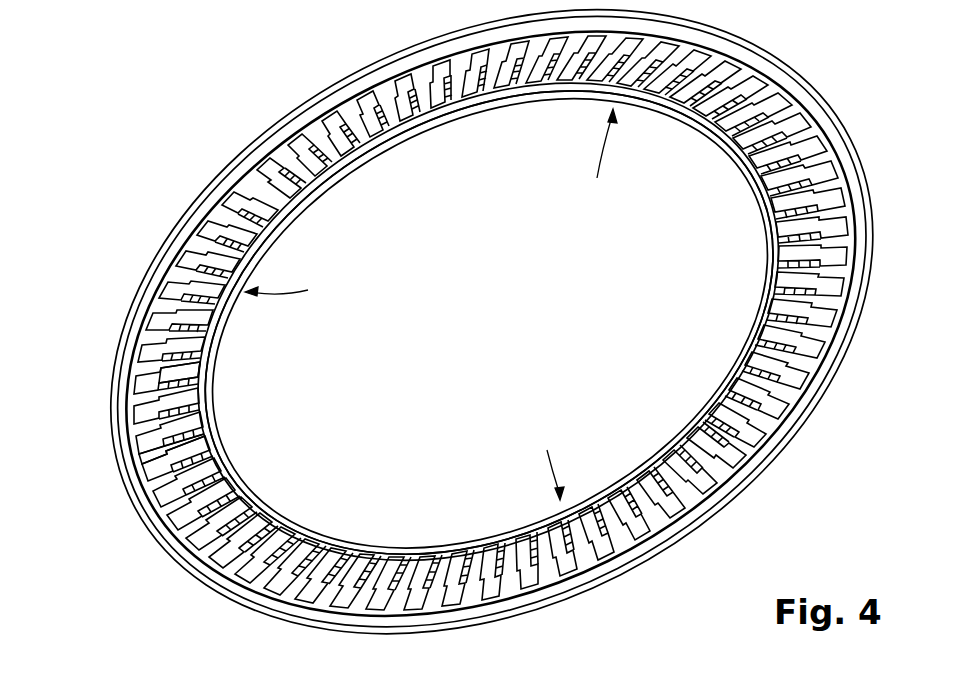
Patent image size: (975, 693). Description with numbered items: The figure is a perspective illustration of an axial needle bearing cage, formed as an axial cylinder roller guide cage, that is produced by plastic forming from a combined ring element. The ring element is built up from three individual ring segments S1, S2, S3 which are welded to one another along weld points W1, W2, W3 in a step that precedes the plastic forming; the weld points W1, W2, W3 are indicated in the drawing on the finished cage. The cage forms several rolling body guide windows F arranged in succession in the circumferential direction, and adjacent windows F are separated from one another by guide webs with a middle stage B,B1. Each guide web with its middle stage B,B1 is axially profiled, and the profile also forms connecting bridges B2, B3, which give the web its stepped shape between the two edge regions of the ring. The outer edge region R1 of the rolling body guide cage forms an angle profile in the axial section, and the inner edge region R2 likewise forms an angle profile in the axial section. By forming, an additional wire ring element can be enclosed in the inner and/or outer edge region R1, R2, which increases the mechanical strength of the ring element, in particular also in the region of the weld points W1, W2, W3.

The outer edge region R1 is at (203, 194).
The inner edge region R2 is at (325, 177).
The ring segment S1 is at (404, 127).
The ring segment S2 is at (778, 260).
The ring segment S3 is at (302, 530).
The weld point W1 is at (289, 292).
The weld point W2 is at (600, 153).
The weld point W3 is at (549, 467).
The guide web, middle stage B,B1 is at (137, 408).
The connecting bridge B2 is at (130, 390).
The connecting bridge B3 is at (192, 369).
The rolling body guide window F is at (190, 427).